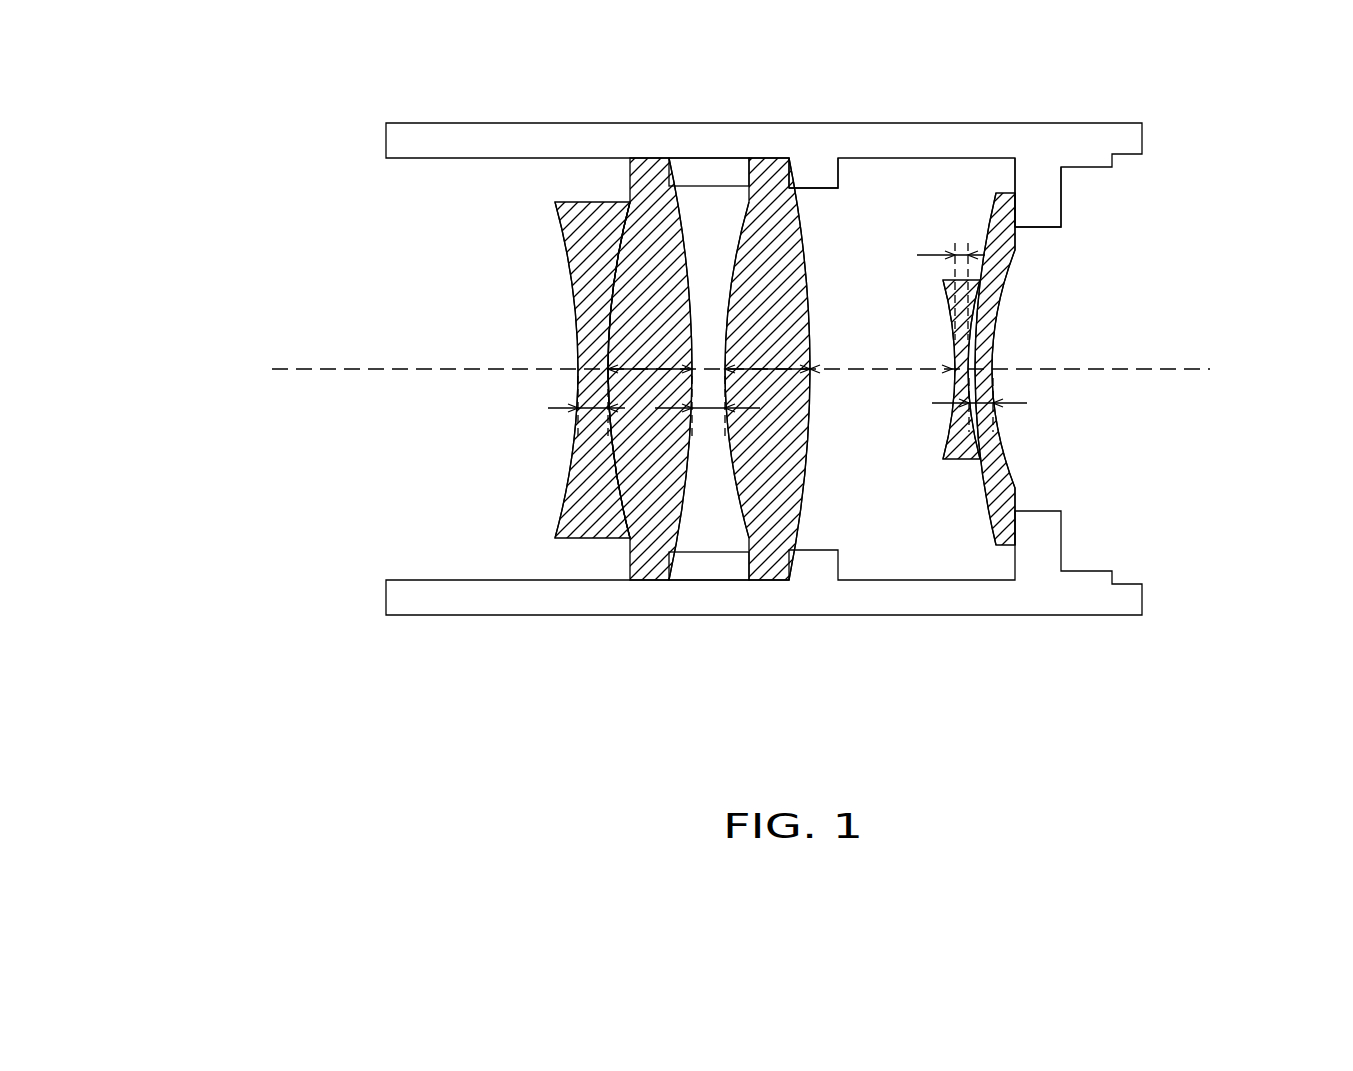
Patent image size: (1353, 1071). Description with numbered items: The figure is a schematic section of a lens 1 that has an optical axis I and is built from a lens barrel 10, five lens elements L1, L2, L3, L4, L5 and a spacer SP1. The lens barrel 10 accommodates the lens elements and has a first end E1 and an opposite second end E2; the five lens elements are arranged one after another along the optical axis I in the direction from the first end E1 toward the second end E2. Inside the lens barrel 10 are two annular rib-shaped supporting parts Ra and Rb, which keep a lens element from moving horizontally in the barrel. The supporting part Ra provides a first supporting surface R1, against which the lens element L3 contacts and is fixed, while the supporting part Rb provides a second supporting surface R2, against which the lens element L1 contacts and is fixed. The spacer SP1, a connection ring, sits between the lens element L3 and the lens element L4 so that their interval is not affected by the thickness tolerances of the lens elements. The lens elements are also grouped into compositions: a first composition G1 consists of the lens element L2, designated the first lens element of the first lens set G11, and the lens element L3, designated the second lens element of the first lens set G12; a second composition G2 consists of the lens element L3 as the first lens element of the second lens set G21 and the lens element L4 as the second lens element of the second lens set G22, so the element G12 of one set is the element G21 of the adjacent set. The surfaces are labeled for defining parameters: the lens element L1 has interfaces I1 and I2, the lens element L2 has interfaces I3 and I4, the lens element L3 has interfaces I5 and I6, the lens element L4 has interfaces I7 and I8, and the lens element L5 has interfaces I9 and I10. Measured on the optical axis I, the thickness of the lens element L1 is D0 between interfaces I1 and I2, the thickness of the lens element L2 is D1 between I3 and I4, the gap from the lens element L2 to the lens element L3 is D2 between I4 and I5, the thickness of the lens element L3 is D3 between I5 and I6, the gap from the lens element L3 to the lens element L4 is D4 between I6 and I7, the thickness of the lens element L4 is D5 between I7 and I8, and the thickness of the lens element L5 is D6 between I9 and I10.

The lens 1 is at (1328, 700).
The lens barrel 10 is at (1117, 132).
The spacer SP1 is at (690, 175).
The supporting surface R1 is at (787, 178).
The supporting surface R2 is at (1013, 172).
The supporting part Ra is at (838, 178).
The supporting part Rb is at (1053, 207).
The first end E1 is at (1252, 125).
The second end E2 is at (270, 118).
The optical axis I is at (1192, 367).
The composition G1 is at (160, 495).
The composition G2 is at (160, 590).
The first lens element of a first lens set G11 is at (598, 499).
The second lens element of the first lens set G12 is at (504, 439).
The first lens element of a second lens set G21 is at (485, 456).
The second lens element of the second lens set G22 is at (429, 439).
The lens element L1 is at (995, 429).
The lens element L2 is at (967, 479).
The lens element L3 is at (779, 419).
The lens element L4 is at (613, 419).
The lens element L5 is at (536, 441).
The interface I1 is at (1010, 262).
The interface I2 is at (988, 242).
The interface I3 is at (977, 346).
The interface I4 is at (951, 333).
The interface I5 is at (806, 279).
The interface I6 is at (734, 268).
The interface I7 is at (684, 264).
The interface I8 is at (630, 185).
The interface I9 is at (611, 296).
The interface I10 is at (577, 346).
The thickness of the lens element L1 D0 is at (983, 398).
The thickness of the lens element L2 D1 is at (949, 279).
The distance of the lens element L2 to the lens element L3 D2 is at (881, 350).
The thickness of the lens element L3 D3 is at (767, 352).
The distance of the lens element L3 to the lens element L4 D4 is at (707, 405).
The thickness of the lens element L4 D5 is at (650, 352).
The thickness of the lens element L5 D6 is at (576, 405).